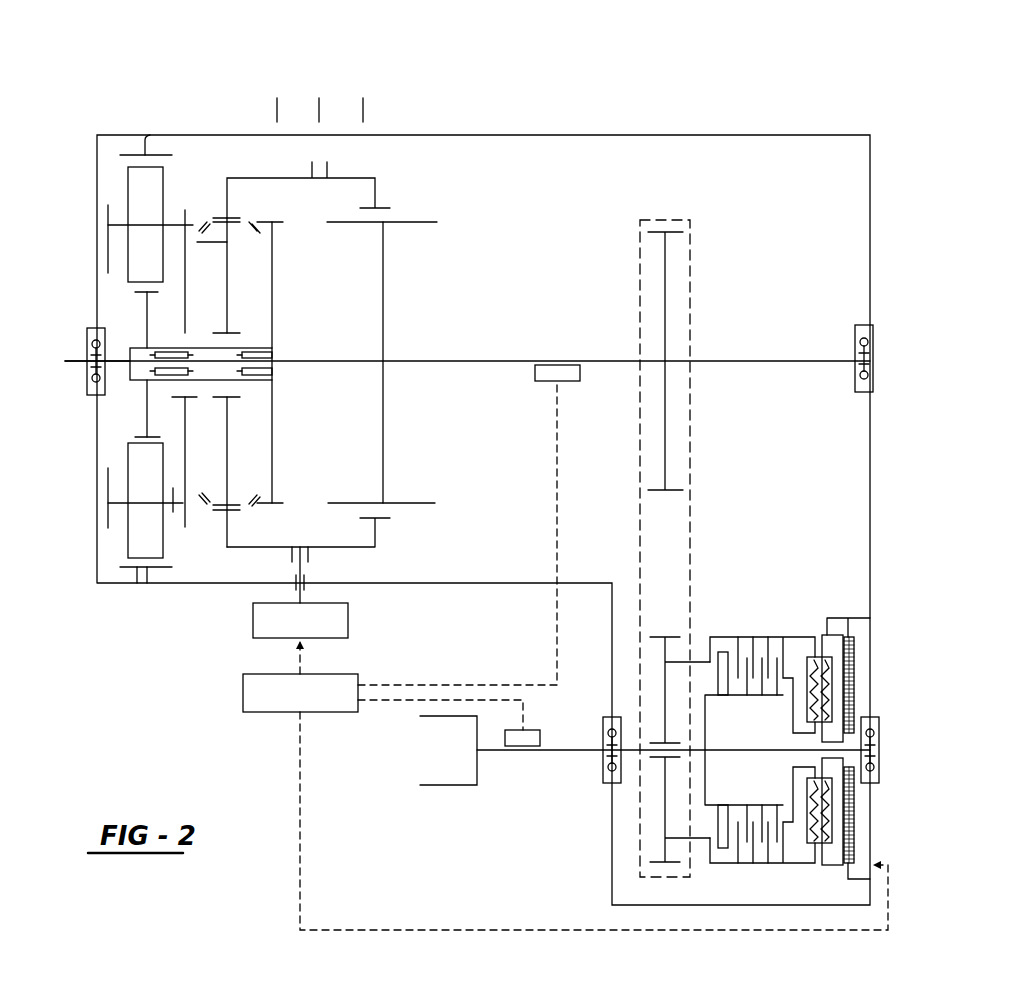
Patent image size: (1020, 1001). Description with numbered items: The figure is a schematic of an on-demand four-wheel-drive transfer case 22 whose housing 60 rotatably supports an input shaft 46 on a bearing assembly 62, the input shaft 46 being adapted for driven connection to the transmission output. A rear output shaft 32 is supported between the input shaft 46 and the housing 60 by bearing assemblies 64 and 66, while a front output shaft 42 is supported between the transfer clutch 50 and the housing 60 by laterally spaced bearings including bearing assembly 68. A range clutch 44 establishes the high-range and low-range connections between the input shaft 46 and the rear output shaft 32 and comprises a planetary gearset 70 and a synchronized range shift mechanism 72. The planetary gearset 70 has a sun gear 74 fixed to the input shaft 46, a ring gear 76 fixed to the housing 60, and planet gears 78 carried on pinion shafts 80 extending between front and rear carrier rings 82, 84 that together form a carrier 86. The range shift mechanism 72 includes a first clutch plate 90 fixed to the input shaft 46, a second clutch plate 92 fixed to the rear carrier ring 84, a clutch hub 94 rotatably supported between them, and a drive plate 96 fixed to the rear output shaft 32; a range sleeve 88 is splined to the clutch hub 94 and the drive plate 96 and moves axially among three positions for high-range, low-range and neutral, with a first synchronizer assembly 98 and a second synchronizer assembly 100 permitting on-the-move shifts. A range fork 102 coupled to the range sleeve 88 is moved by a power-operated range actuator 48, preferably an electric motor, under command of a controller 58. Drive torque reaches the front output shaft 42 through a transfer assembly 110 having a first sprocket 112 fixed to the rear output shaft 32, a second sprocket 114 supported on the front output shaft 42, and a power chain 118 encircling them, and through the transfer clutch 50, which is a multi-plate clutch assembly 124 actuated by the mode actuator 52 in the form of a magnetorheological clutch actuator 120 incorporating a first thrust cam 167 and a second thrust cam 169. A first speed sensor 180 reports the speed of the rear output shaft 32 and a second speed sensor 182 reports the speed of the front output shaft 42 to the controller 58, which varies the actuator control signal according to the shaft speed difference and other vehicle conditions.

The transfer case 22 is at (528, 50).
The rear output shaft 32 is at (760, 361).
The front output shaft 42 is at (572, 752).
The range clutch 44 is at (201, 152).
The input shaft 46 is at (74, 361).
The range actuator 48 is at (253, 618).
The transfer clutch 50 is at (763, 616).
The mode actuator 52 is at (832, 598).
The controller 58 is at (243, 700).
The housing 60 is at (645, 135).
The bearing assembly 62 is at (92, 392).
The bearing assembly 64 is at (272, 357).
The bearing assembly 66 is at (857, 333).
The bearing assembly 68 is at (606, 720).
The planetary gearset 70 is at (112, 542).
The synchronized range shift mechanism 72 is at (298, 247).
The sun gear 74 is at (146, 312).
The ring gear 76 is at (150, 134).
The planet gears 78 is at (133, 181).
The pinion shafts 80 is at (173, 512).
The front carrier ring 82 is at (110, 238).
The rear carrier ring 84 is at (185, 268).
The carrier 86 is at (107, 505).
The range sleeve 88 is at (270, 178).
The first clutch plate 90 is at (272, 430).
The second clutch plate 92 is at (185, 210).
The clutch hub 94 is at (227, 268).
The drive plate 96 is at (383, 420).
The first synchronizer assembly 98 is at (253, 486).
The second synchronizer assembly 100 is at (204, 486).
The range fork 102 is at (304, 565).
The transfer assembly 110 is at (760, 448).
The first sprocket 112 is at (665, 270).
The second sprocket 114 is at (665, 805).
The power chain 118 is at (690, 535).
The magnetorheological clutch actuator 120 is at (826, 632).
The multi-plate clutch assembly 124 is at (745, 641).
The first thrust cam 167 is at (808, 851).
The second thrust cam 169 is at (831, 850).
The first speed sensor 180 is at (545, 373).
The second speed sensor 182 is at (527, 735).